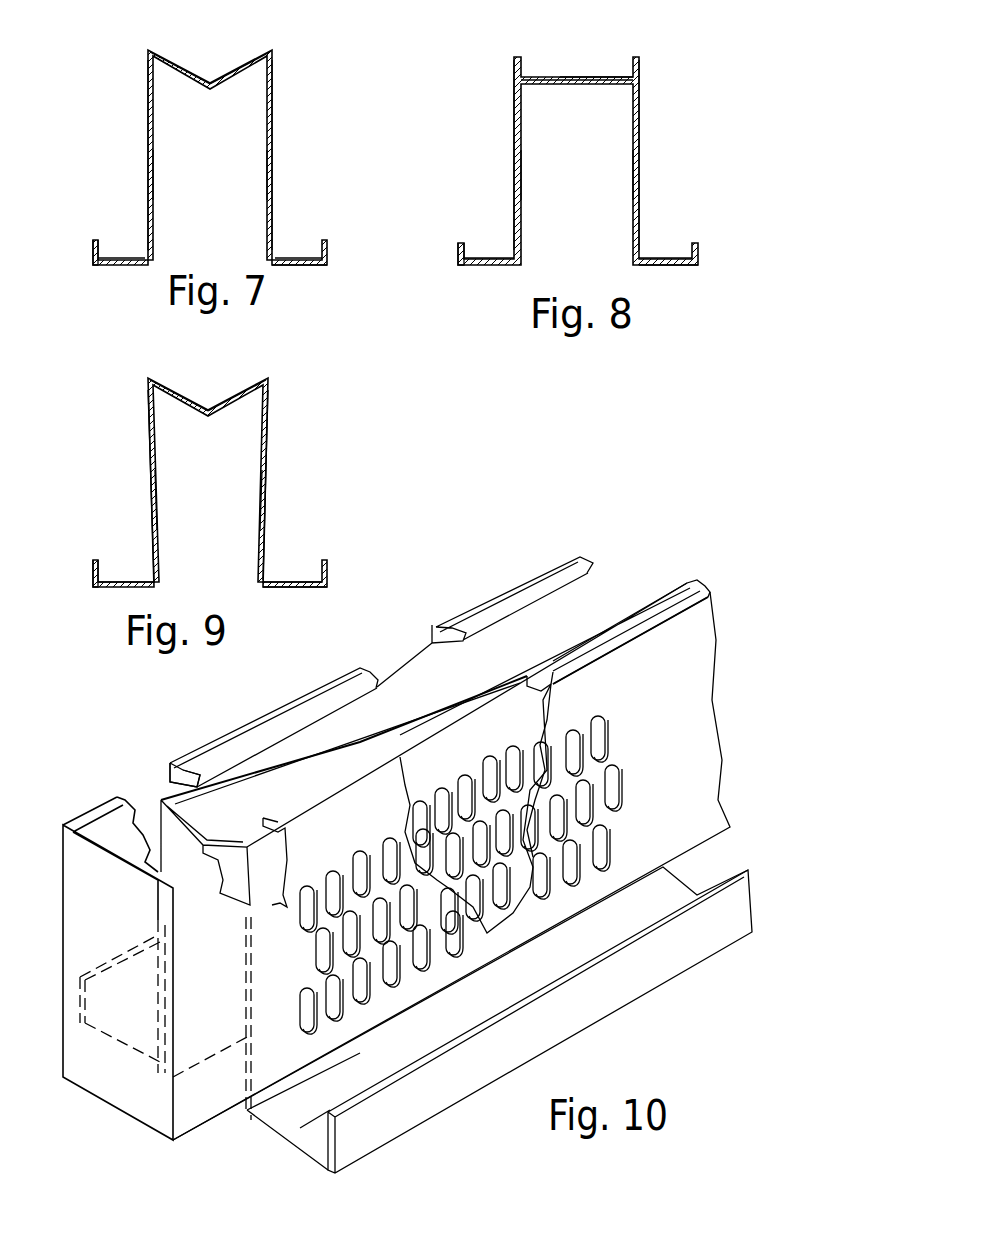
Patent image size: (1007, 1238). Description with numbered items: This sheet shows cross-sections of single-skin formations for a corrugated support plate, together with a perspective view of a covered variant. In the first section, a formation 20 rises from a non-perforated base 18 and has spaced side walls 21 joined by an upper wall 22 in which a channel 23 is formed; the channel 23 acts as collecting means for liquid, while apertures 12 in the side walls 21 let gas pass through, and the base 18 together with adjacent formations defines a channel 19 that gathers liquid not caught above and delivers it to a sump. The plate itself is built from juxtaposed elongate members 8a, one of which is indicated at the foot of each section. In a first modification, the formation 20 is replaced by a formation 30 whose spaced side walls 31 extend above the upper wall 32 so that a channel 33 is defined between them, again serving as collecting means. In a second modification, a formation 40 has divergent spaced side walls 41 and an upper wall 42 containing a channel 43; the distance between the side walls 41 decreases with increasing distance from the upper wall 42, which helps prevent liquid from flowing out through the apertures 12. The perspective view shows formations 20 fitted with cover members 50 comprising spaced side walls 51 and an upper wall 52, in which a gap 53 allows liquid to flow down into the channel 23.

In FIG. 7, the apertures 12 is at (150, 197).
In FIG. 8, the apertures 12 is at (514, 195).
In FIG. 9, the apertures 12 is at (154, 520).
In FIG. 10, the apertures 12 is at (513, 763).
In FIG. 7, the base 18 is at (93, 253).
In FIG. 8, the base 18 is at (467, 240).
In FIG. 9, the base 18 is at (98, 562).
In FIG. 10, the base 18 is at (383, 1067).
In FIG. 7, the channel 19 is at (112, 239).
In FIG. 8, the channel 19 is at (492, 239).
In FIG. 9, the channel 19 is at (124, 564).
In FIG. 7, the formations 20 is at (190, 86).
In FIG. 10, the formations 20 is at (251, 1078).
In FIG. 7, the side walls 21 is at (148, 137).
In FIG. 10, the side walls 21 is at (247, 975).
In FIG. 7, the upper wall 22 is at (250, 57).
In FIG. 7, the channel 23 is at (199, 50).
In FIG. 8, the formations 30 is at (562, 86).
In FIG. 8, the side walls 31 is at (514, 70).
In FIG. 8, the upper wall 32 is at (605, 75).
In FIG. 8, the channel 33 is at (570, 67).
In FIG. 9, the formations 40 is at (192, 407).
In FIG. 9, the side walls 41 is at (150, 430).
In FIG. 9, the upper wall 42 is at (247, 383).
In FIG. 9, the channel 43 is at (192, 379).
In FIG. 10, the cover members 50 is at (257, 718).
In FIG. 10, the side walls 51 is at (150, 840).
In FIG. 10, the upper wall 52 is at (517, 590).
In FIG. 10, the gap 53 is at (327, 750).
In FIG. 7, the elongate members 8a is at (303, 266).
In FIG. 8, the elongate members 8a is at (663, 266).
In FIG. 9, the elongate members 8a is at (297, 588).
In FIG. 10, the elongate members 8a is at (300, 1125).